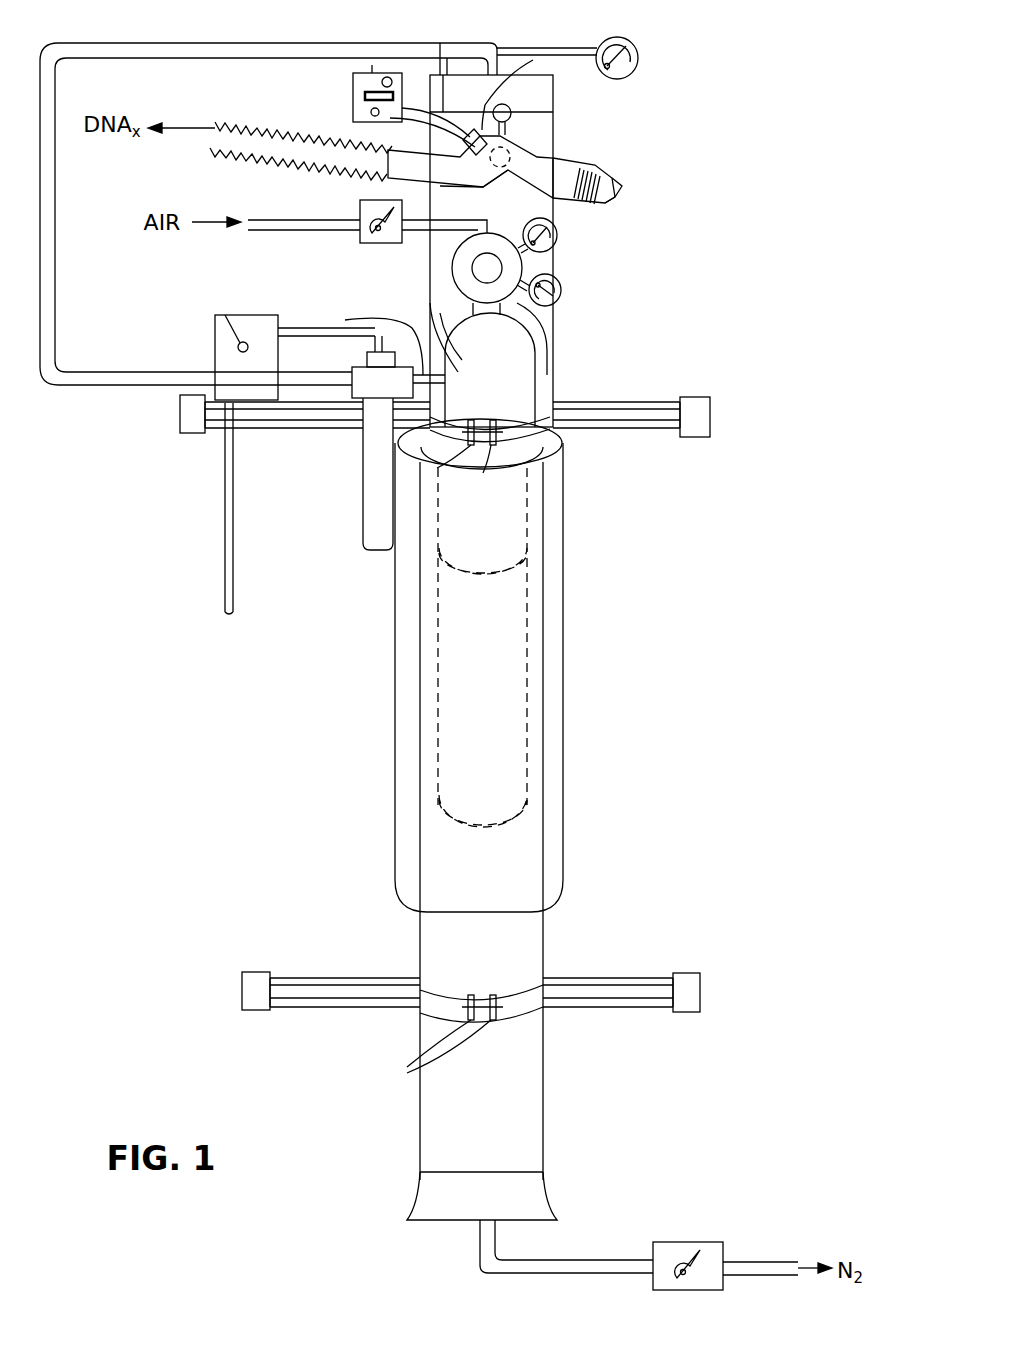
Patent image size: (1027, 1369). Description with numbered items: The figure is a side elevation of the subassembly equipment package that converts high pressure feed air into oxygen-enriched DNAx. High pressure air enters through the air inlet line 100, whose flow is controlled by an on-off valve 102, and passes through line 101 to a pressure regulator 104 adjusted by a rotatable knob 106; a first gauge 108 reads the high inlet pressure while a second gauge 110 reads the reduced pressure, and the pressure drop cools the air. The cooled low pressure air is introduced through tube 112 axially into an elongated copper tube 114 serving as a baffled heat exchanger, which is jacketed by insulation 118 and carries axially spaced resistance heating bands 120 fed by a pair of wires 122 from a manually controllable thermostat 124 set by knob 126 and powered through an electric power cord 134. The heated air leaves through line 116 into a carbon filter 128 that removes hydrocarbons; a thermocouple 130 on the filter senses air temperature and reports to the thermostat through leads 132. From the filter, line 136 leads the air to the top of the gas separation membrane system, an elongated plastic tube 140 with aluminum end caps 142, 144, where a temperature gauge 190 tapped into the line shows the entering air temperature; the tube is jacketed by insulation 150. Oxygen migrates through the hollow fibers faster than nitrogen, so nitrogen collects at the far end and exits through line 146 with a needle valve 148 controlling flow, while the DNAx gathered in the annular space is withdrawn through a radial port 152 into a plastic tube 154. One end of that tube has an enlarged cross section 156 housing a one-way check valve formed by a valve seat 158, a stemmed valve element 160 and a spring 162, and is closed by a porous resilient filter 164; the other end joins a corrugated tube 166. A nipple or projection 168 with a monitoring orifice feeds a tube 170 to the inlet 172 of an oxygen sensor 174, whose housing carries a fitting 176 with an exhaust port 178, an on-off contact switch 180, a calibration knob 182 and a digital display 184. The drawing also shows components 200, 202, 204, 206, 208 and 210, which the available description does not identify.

The air inlet line 100 is at (278, 231).
The line 101 is at (418, 232).
The on-off valve 102 is at (363, 244).
The pressure regulator 104 is at (451, 258).
The rotatable knob 106 is at (470, 318).
The first gauge 108 is at (557, 237).
The second gauge 110 is at (562, 290).
The tube 112 is at (547, 348).
The elongated copper tube 114 is at (525, 940).
The line 116 is at (422, 380).
The insulation 118 is at (527, 462).
The resistance heating bands 120 is at (520, 572).
The pair of wires 122 is at (358, 303).
The manually controllable thermostat 124 is at (213, 350).
The knob 126 is at (221, 316).
The carbon filter 128 is at (367, 470).
The thermocouple 130 is at (355, 300).
The leads 132 is at (302, 330).
The electric power cord 134 is at (228, 493).
The line 136 is at (55, 268).
The elongated plastic tube 140 is at (533, 60).
The aluminum end cap 142 is at (553, 98).
The aluminum end cap 144 is at (545, 1200).
The line 146 is at (545, 1270).
The needle valve 148 is at (677, 1242).
The insulation 150 is at (560, 445).
The radial port 152 is at (512, 152).
The plastic tube 154 is at (395, 182).
The enlarged cross section 156 is at (598, 165).
The valve seat 158 is at (610, 170).
The stemmed valve element 160 is at (614, 186).
The spring 162 is at (550, 198).
The porous resilient filter 164 is at (612, 197).
The corrugated tube 166 is at (233, 157).
The nipple or projection 168 is at (502, 104).
The tube 170 is at (440, 52).
The inlet 172 is at (375, 128).
The oxygen sensor 174 is at (372, 65).
The fitting 176 is at (353, 97).
The exhaust port 178 is at (371, 112).
The on-off contact switch 180 is at (365, 73).
The calibration knob 182 is at (384, 72).
The digital display 184 is at (366, 97).
The temperature gauge 190 is at (640, 58).
The support bracket 200 is at (218, 428).
The mounting block 202 is at (182, 413).
The support rod 204 is at (323, 428).
The clamp band 206 is at (440, 420).
The wires 208 is at (470, 470).
The clamp bolt 210 is at (487, 427).